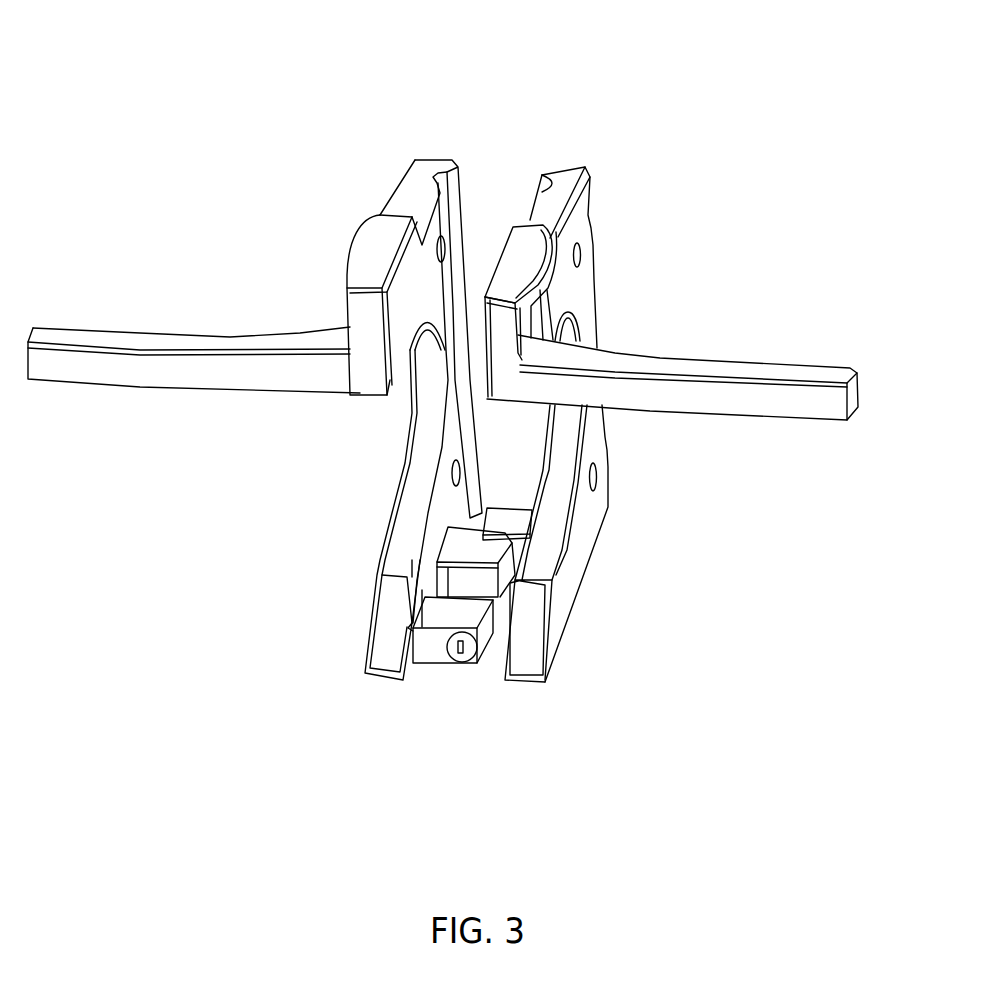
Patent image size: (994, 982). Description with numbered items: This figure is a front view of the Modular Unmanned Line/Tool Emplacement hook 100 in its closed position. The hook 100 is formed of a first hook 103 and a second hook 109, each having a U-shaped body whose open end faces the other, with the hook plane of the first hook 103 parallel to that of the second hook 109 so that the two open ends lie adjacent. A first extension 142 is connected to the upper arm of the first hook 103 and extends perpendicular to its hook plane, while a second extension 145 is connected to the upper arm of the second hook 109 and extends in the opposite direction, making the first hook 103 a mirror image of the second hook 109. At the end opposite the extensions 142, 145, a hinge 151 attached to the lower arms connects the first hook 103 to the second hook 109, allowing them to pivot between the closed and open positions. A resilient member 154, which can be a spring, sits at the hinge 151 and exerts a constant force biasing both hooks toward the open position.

The MULE hook 100 is at (521, 86).
The first hook 103 is at (572, 587).
The second hook 109 is at (392, 607).
The first extension 142 is at (812, 366).
The second extension 145 is at (153, 330).
The hinge 151 is at (432, 655).
The resilient member 154 is at (467, 674).